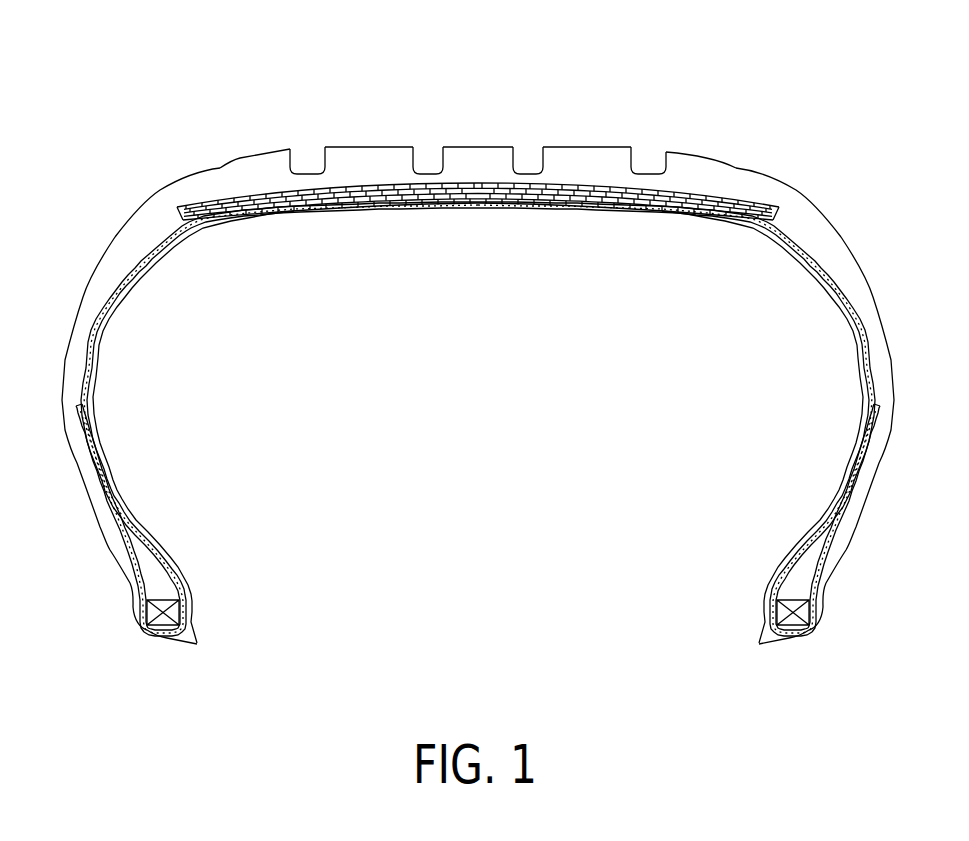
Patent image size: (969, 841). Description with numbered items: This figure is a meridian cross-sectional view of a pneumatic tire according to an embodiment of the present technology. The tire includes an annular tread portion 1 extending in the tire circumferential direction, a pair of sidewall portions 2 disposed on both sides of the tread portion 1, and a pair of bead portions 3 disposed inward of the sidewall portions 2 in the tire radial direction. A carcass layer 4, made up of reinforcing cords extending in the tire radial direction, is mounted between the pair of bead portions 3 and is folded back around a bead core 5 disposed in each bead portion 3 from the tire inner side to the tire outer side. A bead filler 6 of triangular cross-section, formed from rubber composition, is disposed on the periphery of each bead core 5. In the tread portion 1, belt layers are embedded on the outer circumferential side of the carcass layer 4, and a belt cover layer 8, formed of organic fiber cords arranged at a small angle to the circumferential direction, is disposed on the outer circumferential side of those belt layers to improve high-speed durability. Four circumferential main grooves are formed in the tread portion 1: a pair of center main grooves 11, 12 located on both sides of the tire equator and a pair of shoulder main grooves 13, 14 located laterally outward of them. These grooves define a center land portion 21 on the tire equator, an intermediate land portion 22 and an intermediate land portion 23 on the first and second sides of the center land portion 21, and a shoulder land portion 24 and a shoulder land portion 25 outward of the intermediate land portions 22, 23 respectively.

The tread portion 1 is at (616, 143).
The sidewall portion 2 is at (73, 316).
The bead portion 3 is at (123, 603).
The carcass layer 4 is at (812, 255).
The bead core 5 is at (170, 613).
The bead filler 6 is at (157, 568).
The belt cover layer 8 is at (245, 190).
The center main groove 11 is at (416, 158).
The center main groove 12 is at (518, 158).
The shoulder main groove 13 is at (292, 158).
The shoulder main groove 14 is at (640, 158).
The center land portion 21 is at (483, 152).
The intermediate land portion 22 is at (363, 152).
The intermediate land portion 23 is at (587, 152).
The shoulder land portion 24 is at (227, 158).
The shoulder land portion 25 is at (760, 177).